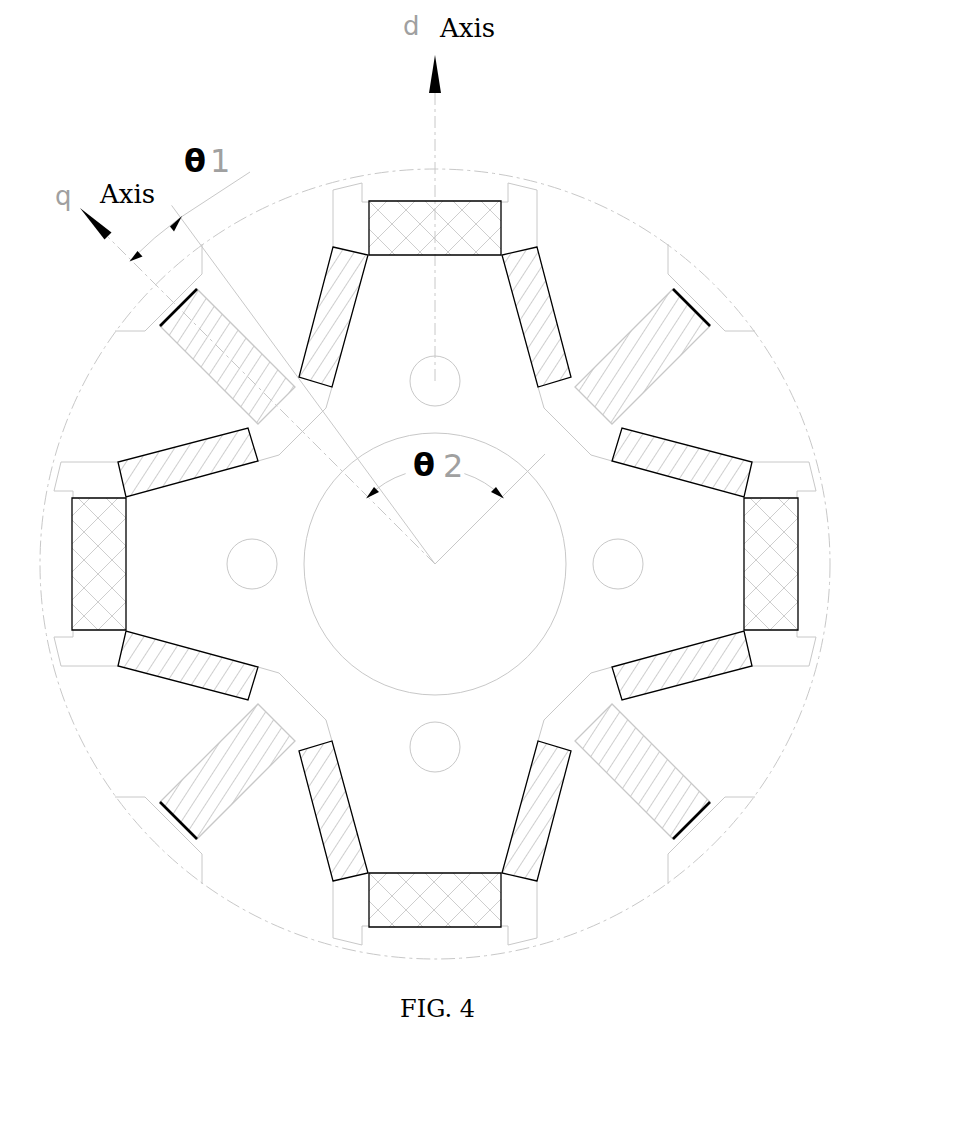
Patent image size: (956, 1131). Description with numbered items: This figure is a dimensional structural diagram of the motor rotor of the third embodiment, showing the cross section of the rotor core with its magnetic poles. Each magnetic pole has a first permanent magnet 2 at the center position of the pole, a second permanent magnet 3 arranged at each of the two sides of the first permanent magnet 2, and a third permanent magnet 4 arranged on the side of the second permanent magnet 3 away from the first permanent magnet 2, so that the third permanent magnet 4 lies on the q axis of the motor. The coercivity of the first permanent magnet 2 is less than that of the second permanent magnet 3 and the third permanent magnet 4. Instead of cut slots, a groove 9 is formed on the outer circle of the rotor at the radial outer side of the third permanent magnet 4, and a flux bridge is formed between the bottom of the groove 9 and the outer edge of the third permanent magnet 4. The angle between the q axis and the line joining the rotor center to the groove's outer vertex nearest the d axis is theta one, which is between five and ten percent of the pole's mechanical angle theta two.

The first permanent magnet 2 is at (463, 218).
The second permanent magnet 3 is at (547, 307).
The third permanent magnet 4 is at (656, 322).
The groove 9 is at (143, 315).